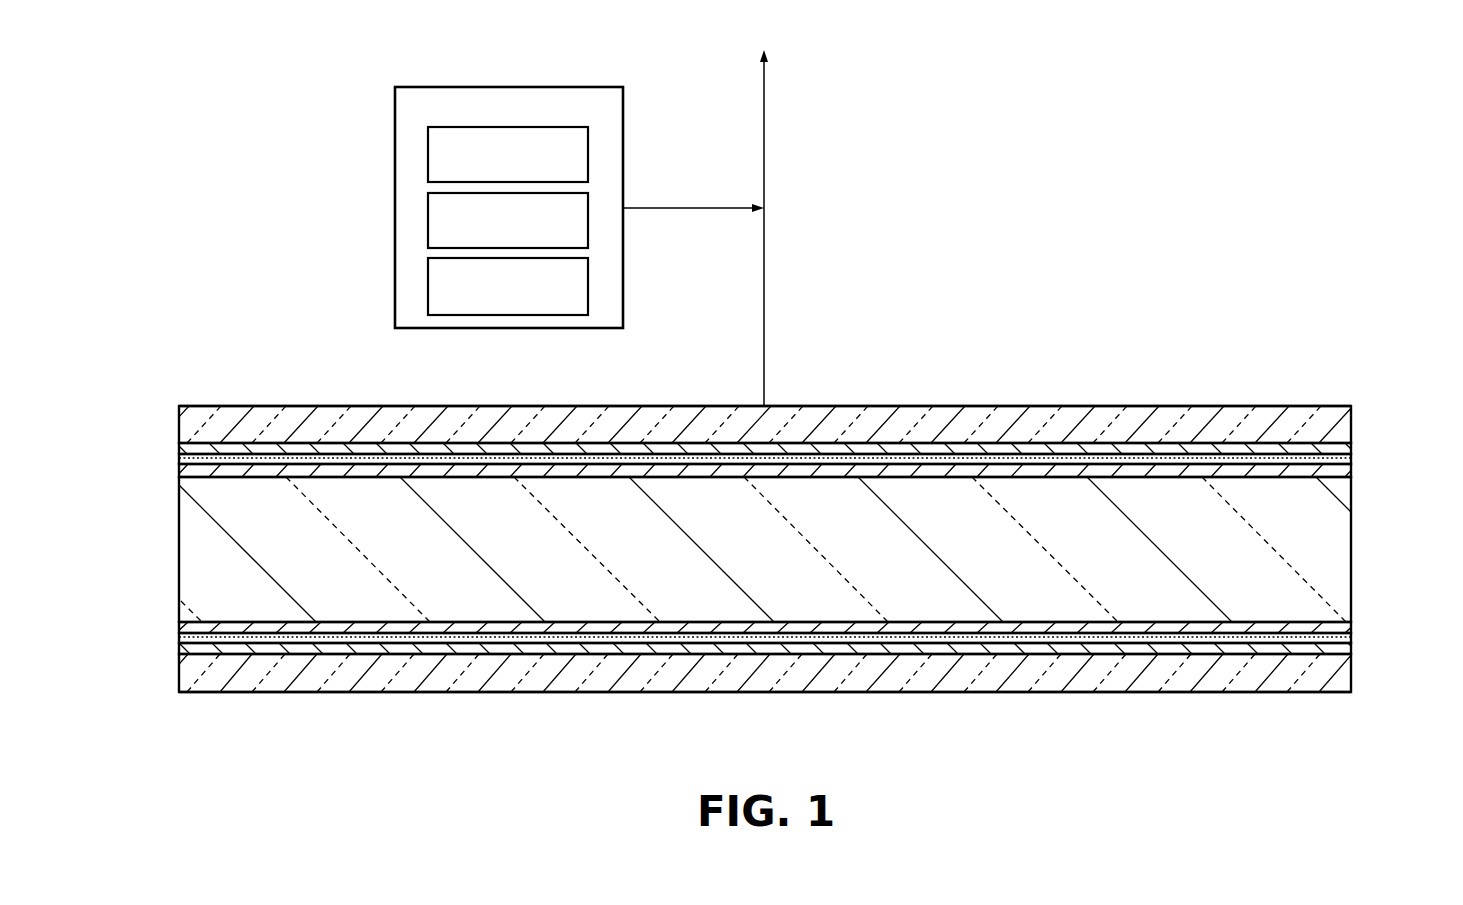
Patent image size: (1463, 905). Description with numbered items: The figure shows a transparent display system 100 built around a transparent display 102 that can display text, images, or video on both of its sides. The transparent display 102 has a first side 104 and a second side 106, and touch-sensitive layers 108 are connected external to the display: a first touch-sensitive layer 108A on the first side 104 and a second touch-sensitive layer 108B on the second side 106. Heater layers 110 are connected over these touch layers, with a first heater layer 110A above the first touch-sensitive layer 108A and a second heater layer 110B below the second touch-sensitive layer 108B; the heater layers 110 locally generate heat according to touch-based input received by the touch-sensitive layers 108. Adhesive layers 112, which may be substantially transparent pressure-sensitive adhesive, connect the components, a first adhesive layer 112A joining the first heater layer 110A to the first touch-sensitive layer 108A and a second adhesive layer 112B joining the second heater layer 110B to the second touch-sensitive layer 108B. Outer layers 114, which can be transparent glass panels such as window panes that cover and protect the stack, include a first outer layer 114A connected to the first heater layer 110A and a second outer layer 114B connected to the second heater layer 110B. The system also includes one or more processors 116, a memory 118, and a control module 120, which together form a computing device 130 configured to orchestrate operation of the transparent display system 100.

The transparent display system 100 is at (783, 42).
The transparent display 102 is at (179, 545).
The first side 104 is at (1106, 406).
The second side 106 is at (1106, 692).
The touch-sensitive layer 108 is at (774, 548).
The first touch-sensitive layer 108A is at (1351, 468).
The second touch-sensitive layer 108B is at (1351, 622).
The heater layer 110 is at (774, 555).
The first heater layer 110A is at (1351, 447).
The second heater layer 110B is at (1351, 650).
The adhesive layer 112 is at (774, 551).
The first adhesive layer 112A is at (1351, 458).
The second adhesive layer 112B is at (1351, 635).
The outer layer 114 is at (756, 546).
The first outer layer 114A is at (1351, 423).
The second outer layer 114B is at (1351, 677).
The processors 116 is at (428, 152).
The memory 118 is at (428, 220).
The control module 120 is at (428, 287).
The computing device 130 is at (469, 207).